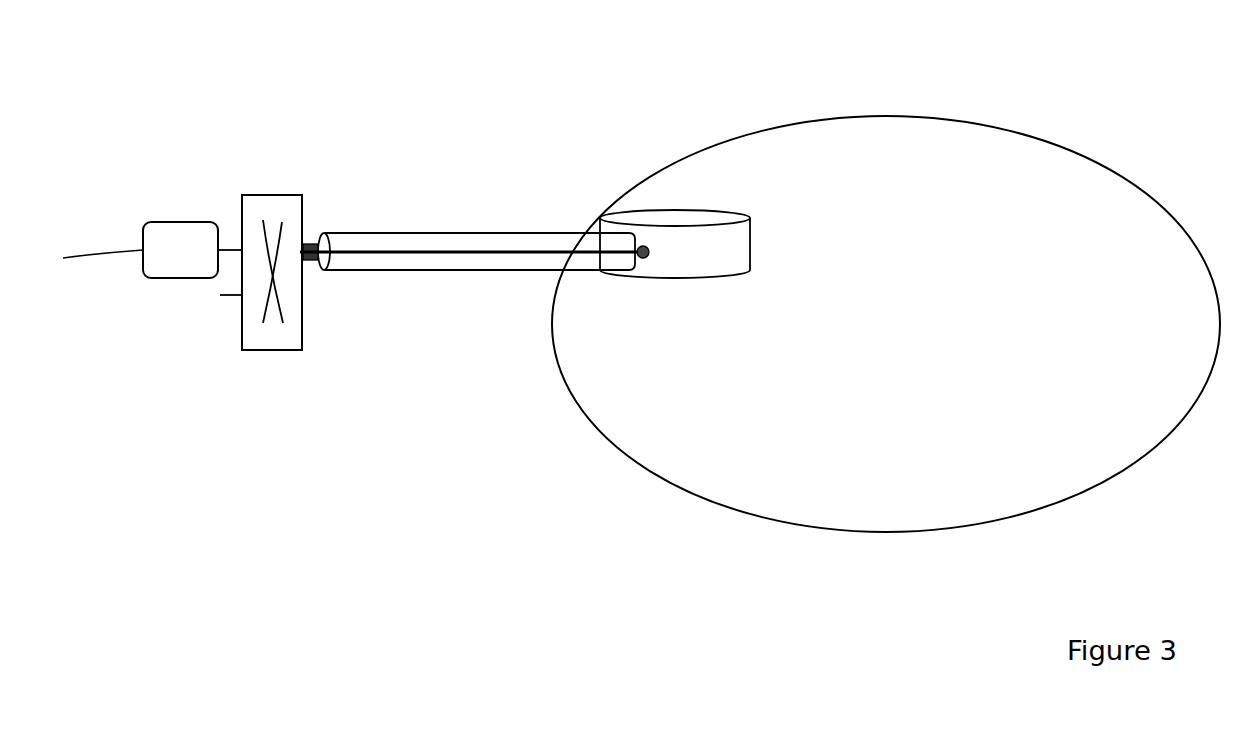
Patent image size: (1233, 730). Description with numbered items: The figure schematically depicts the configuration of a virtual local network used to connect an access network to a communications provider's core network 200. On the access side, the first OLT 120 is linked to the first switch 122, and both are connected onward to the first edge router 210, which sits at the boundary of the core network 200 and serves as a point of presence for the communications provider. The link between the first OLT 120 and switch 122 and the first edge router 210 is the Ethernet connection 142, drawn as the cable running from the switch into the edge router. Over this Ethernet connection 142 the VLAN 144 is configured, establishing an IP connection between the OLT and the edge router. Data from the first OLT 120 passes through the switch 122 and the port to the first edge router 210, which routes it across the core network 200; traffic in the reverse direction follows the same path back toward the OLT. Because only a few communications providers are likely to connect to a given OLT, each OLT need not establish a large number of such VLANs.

The first OLT 120 is at (158, 233).
The first switch 122 is at (268, 203).
The Ethernet connection 142 is at (560, 243).
The VLAN 144 is at (410, 250).
The core network 200 is at (908, 497).
The first edge router 210 is at (713, 220).